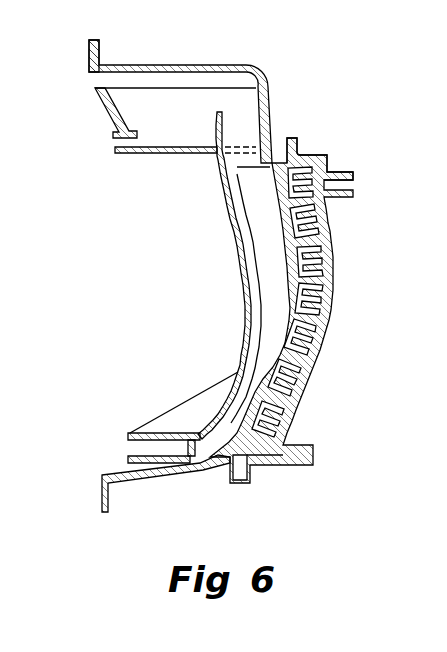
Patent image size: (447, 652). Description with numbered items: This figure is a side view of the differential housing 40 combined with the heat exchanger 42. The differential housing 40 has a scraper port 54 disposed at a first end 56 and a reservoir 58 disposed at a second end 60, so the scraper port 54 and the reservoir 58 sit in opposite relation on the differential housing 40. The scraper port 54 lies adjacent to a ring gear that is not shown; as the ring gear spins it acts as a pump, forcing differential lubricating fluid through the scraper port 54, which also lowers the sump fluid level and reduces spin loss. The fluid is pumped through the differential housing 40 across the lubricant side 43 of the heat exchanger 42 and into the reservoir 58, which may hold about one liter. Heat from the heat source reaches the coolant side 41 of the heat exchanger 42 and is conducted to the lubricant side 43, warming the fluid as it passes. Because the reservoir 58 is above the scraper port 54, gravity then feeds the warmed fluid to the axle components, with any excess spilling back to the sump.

The differential housing 40 is at (167, 58).
The coolant side 41 is at (323, 201).
The heat exchanger 42 is at (306, 136).
The lubricant side 43 is at (287, 283).
The scraper port 54 is at (128, 447).
The first end 56 is at (102, 497).
The reservoir 58 is at (133, 117).
The second end 60 is at (89, 56).